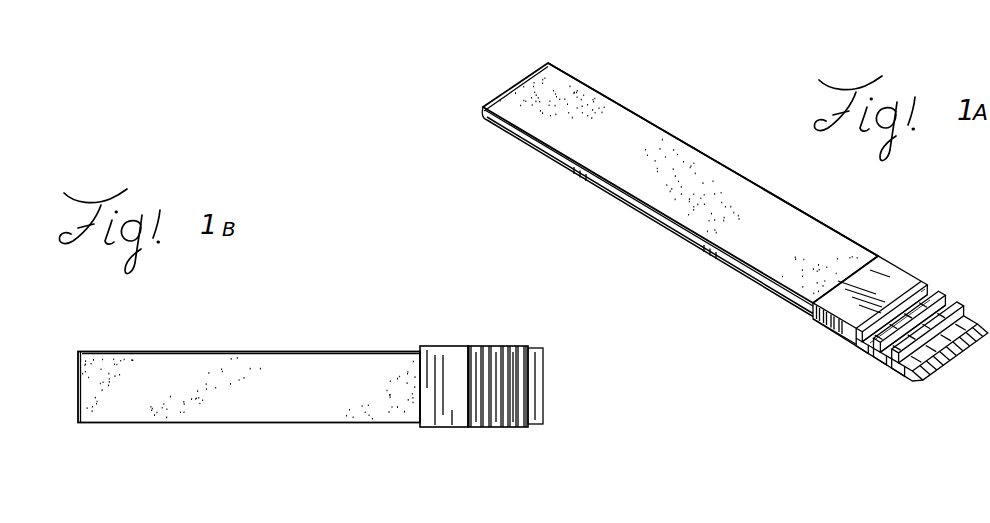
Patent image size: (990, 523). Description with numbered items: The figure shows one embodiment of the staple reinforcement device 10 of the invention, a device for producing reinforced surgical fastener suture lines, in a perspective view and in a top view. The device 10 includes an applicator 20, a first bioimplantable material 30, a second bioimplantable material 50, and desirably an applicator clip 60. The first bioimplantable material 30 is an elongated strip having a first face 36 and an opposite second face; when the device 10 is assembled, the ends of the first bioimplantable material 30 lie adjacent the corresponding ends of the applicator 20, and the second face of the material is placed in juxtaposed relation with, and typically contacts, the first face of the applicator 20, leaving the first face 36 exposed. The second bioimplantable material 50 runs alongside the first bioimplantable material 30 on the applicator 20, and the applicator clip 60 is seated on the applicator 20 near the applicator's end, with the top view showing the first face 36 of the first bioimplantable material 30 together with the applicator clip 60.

In FIG. 1A, the staple reinforcement device 10 is at (670, 48).
In FIG. 1A, the applicator 20 is at (951, 378).
In FIG. 1A, the first bioimplantable material 30 is at (664, 142).
In FIG. 1B, the first face 36 is at (305, 360).
In FIG. 1A, the second bioimplantable material 50 is at (669, 226).
In FIG. 1A, the applicator clip 60 is at (889, 289).